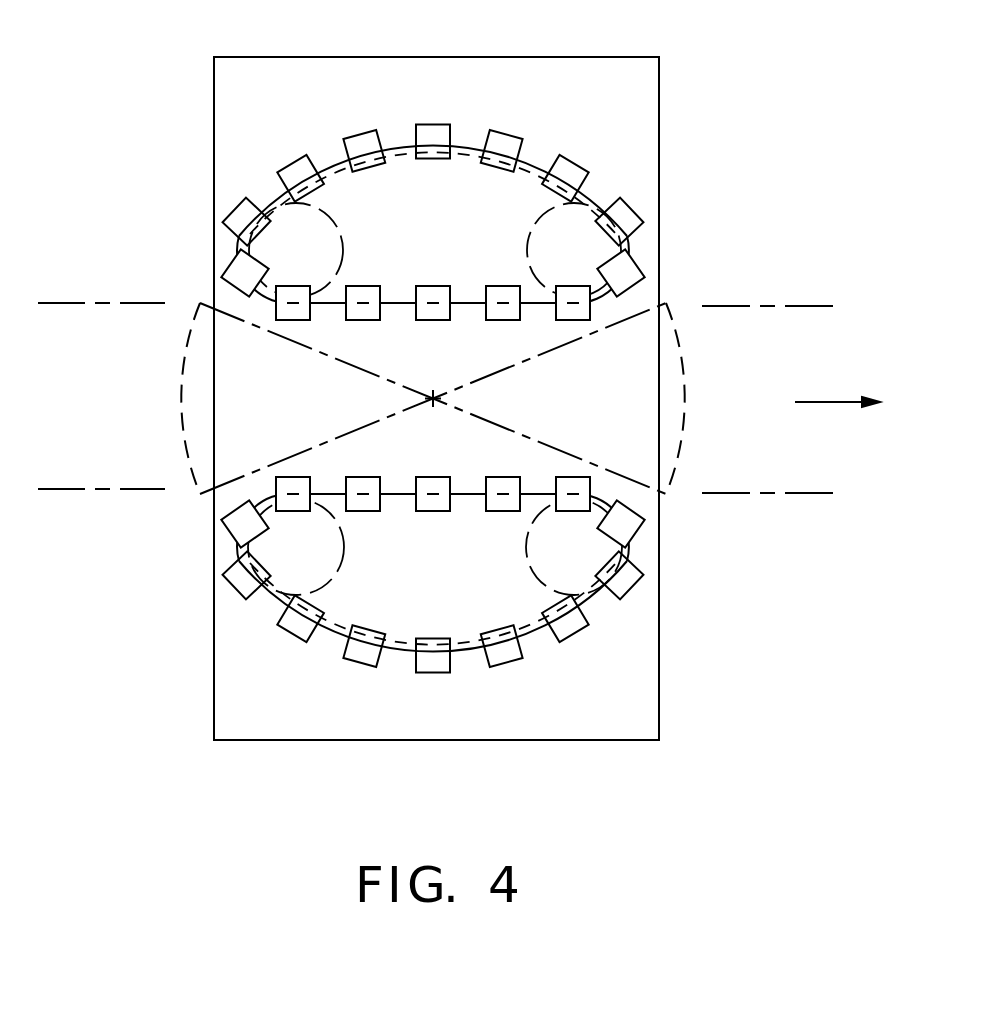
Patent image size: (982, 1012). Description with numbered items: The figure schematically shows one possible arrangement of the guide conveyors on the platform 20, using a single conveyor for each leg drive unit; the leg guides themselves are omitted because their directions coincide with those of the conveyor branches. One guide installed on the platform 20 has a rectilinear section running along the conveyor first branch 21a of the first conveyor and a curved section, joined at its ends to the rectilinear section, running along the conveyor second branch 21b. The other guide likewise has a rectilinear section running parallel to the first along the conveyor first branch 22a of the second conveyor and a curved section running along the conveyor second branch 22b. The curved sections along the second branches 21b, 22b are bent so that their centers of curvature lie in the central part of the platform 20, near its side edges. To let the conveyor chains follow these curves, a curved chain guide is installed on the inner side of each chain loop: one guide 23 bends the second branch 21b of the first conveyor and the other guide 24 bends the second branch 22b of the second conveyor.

The platform 20 is at (247, 103).
The conveyor first branch 21a is at (356, 287).
The conveyor second branch 21b is at (403, 143).
The conveyor first branch 22a is at (329, 493).
The conveyor second branch 22b is at (463, 652).
The curved chain guide 23 is at (530, 173).
The curved chain guide 24 is at (537, 637).